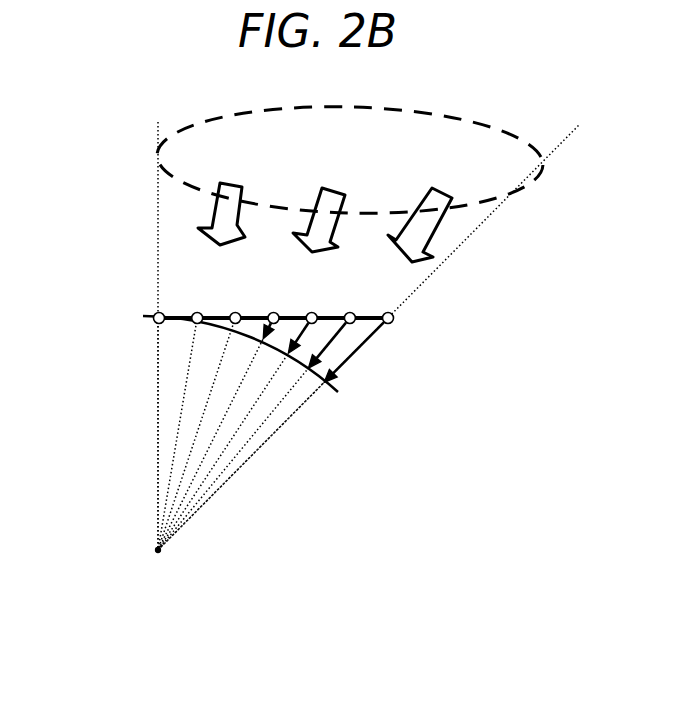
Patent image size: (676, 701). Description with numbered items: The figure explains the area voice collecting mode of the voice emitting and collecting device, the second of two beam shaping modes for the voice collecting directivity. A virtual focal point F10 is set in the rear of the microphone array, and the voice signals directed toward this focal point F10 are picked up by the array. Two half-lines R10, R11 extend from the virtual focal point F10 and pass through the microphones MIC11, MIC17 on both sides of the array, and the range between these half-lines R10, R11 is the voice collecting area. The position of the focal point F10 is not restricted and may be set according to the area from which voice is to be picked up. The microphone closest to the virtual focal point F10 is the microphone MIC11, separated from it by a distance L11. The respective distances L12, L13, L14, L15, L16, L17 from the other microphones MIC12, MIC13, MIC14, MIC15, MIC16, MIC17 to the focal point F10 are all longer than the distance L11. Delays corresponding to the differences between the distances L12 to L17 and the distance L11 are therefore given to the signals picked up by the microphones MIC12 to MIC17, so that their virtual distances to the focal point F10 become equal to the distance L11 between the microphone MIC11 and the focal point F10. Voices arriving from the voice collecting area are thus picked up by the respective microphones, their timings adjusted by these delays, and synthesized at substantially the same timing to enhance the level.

The half-line R10 is at (135, 336).
The half-line R11 is at (368, 337).
The microphone MIC11 is at (153, 318).
The microphone MIC12 is at (197, 312).
The microphone MIC13 is at (235, 312).
The microphone MIC14 is at (273, 312).
The microphone MIC15 is at (312, 324).
The microphone MIC16 is at (350, 324).
The microphone MIC17 is at (394, 319).
The distance L11 is at (156, 434).
The distance L12 is at (177, 434).
The distance L13 is at (197, 434).
The distance L14 is at (216, 434).
The distance L15 is at (235, 434).
The distance L16 is at (254, 434).
The distance L17 is at (273, 434).
The virtual focal point F10 is at (276, 569).